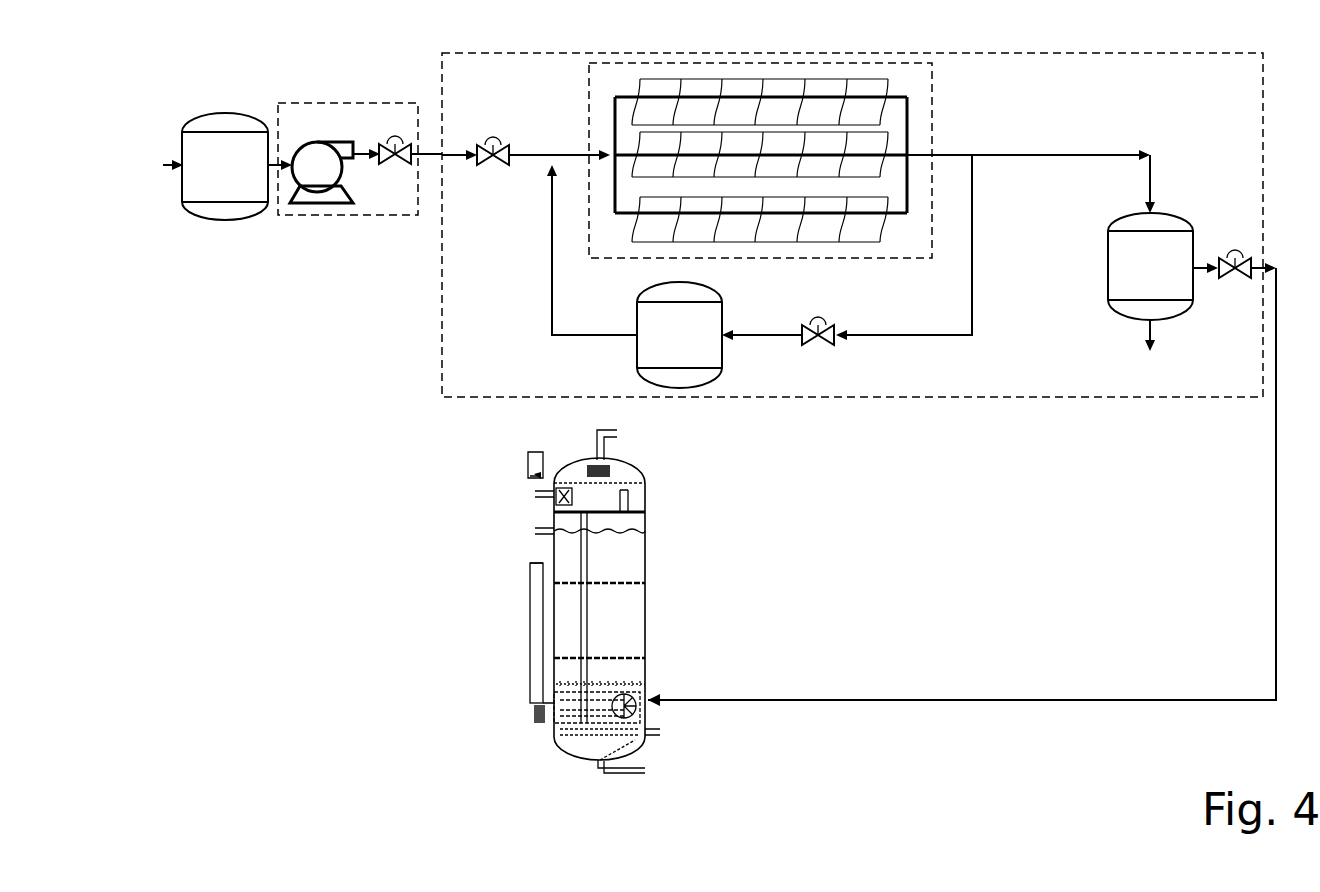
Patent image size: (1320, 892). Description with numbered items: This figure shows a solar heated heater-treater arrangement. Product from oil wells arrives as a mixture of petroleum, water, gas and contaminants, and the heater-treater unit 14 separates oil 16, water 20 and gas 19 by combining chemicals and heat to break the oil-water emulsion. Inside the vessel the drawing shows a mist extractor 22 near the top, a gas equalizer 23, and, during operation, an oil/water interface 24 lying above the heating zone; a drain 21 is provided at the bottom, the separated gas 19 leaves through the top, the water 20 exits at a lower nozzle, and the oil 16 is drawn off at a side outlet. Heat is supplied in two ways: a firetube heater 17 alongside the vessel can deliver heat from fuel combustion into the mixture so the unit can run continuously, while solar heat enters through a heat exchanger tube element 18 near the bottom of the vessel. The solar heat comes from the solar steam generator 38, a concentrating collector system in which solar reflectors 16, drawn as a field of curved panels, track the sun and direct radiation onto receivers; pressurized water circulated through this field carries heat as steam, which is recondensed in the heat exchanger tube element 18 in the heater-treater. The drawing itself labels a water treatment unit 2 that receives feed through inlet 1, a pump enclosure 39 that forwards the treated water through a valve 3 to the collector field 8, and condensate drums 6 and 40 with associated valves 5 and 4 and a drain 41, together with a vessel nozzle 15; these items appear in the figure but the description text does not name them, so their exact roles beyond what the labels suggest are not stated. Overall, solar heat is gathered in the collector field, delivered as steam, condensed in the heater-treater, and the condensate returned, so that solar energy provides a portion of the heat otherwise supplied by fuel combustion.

The feed water inlet 1 is at (163, 159).
The water treatment unit 2 is at (207, 114).
The boiler feed valve 3 is at (486, 142).
The condensate outlet valve 4 is at (1226, 249).
The condensate return valve 5 is at (811, 316).
The condensate drum 6 is at (641, 288).
The solar steam generator / tube bundle 8 is at (584, 89).
The heater-treater unit 14 is at (573, 455).
The feed inlet nozzle 15 is at (530, 494).
The oil 16 is at (878, 121).
The firetube heater 17 is at (530, 718).
The heat exchanger tube element 18 is at (658, 699).
The gas 19 is at (620, 433).
The water 20 is at (663, 732).
The drain 21 is at (650, 771).
The mist extractor 22 is at (611, 466).
The gas equalizer 23 is at (629, 495).
The oil/water interface 24 is at (642, 684).
The solar steam generator 38 is at (436, 75).
The feed pump unit 39 is at (276, 104).
The condensate drum 40 is at (1123, 210).
The condensate drain 41 is at (1169, 346).